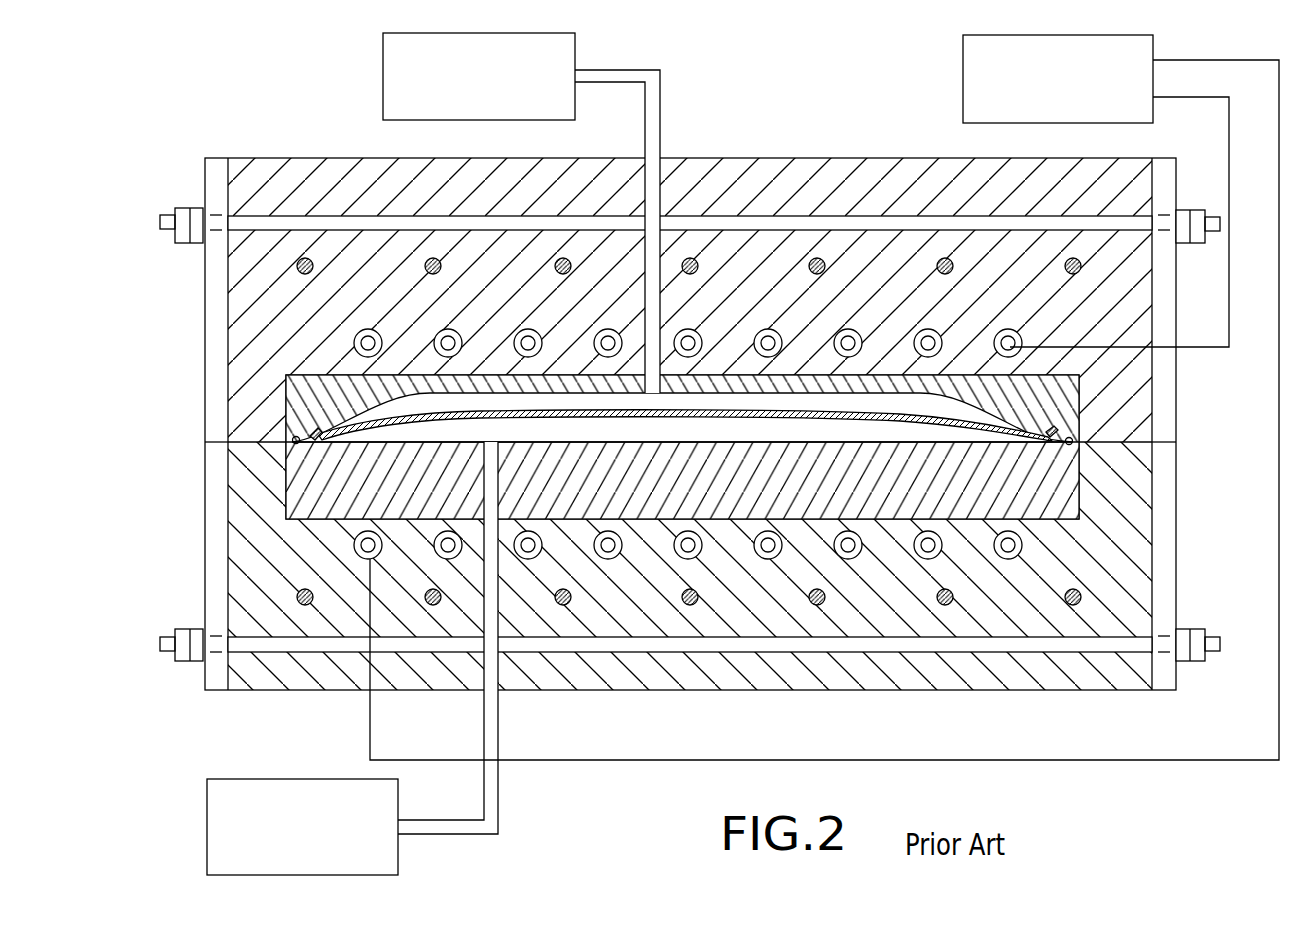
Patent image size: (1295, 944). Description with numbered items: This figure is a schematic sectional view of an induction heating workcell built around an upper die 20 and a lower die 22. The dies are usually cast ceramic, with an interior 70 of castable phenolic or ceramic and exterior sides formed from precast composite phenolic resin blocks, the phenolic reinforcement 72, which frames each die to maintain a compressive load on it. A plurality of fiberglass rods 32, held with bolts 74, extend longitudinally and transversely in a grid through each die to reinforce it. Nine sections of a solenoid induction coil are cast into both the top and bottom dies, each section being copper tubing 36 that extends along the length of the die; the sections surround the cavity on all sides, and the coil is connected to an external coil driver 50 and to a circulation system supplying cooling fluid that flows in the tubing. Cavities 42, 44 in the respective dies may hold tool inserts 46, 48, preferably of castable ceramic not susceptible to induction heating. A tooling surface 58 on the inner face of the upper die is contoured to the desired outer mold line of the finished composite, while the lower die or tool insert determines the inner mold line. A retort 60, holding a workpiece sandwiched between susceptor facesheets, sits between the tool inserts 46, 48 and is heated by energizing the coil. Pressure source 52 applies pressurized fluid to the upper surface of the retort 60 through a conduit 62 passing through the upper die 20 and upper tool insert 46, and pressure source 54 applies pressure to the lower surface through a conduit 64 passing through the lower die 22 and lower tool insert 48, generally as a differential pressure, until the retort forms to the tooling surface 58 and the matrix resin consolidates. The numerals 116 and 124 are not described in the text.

The upper die 20 is at (772, 128).
The lower die 22 is at (1040, 724).
The fiberglass rods 32 is at (278, 214).
The copper tubing 36 is at (368, 329).
The cavity 42 is at (1170, 345).
The cavity 44 is at (693, 437).
The upper tool insert 46 is at (287, 392).
The lower tool insert 48 is at (300, 497).
The coil driver 50 is at (963, 78).
The pressure source 52 is at (383, 78).
The pressure source 54 is at (207, 832).
The tooling surface 58 is at (1082, 395).
The retort 60 is at (1010, 440).
The conduit 62 is at (662, 162).
The conduit 64 is at (498, 797).
The interior of the dies 70 is at (318, 168).
The phenolic reinforcement 72 is at (215, 319).
The bolts 74 is at (1203, 212).
The metal workpiece sheet 116 is at (1060, 418).
The edge seal 124 is at (285, 430).